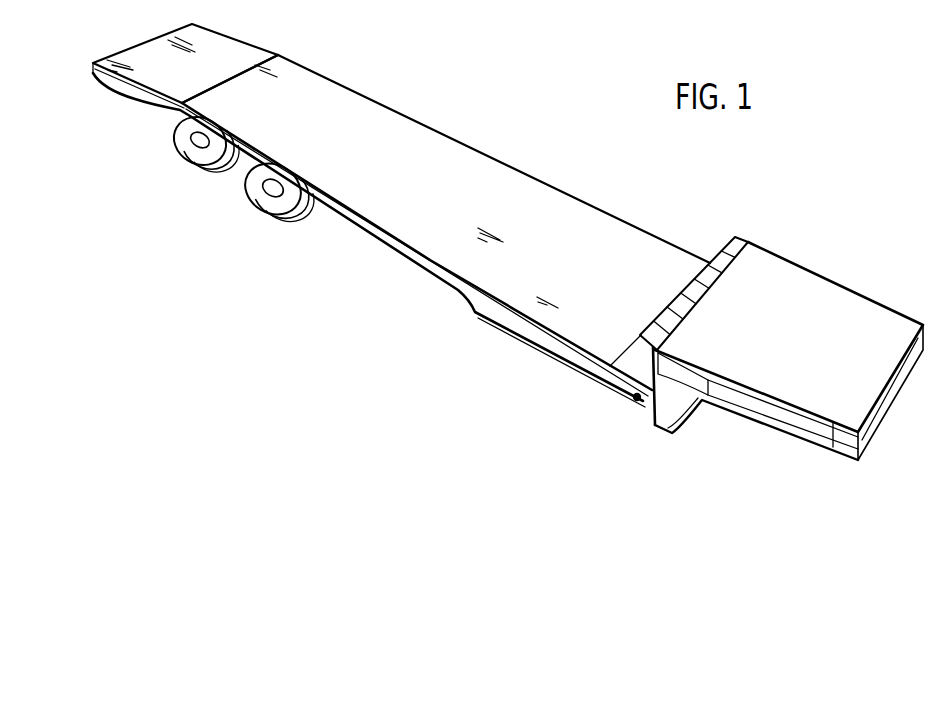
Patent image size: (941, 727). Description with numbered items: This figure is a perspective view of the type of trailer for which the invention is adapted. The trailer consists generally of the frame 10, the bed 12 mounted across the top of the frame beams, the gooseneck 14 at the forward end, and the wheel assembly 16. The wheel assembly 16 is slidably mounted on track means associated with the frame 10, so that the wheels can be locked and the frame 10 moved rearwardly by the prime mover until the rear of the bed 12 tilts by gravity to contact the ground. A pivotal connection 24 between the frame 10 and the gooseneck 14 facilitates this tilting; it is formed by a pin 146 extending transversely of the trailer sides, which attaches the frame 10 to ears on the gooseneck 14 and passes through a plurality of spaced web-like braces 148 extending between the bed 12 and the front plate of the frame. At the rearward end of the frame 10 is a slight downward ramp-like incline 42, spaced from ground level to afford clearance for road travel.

The frame 10 is at (524, 356).
The bed 12 is at (503, 178).
The gooseneck 14 is at (800, 402).
The wheel assembly 16 is at (207, 172).
The pivotal connection 24 is at (629, 386).
The ramp-like incline 42 is at (182, 77).
The pin 146 is at (633, 402).
The web like braces 148 is at (652, 322).